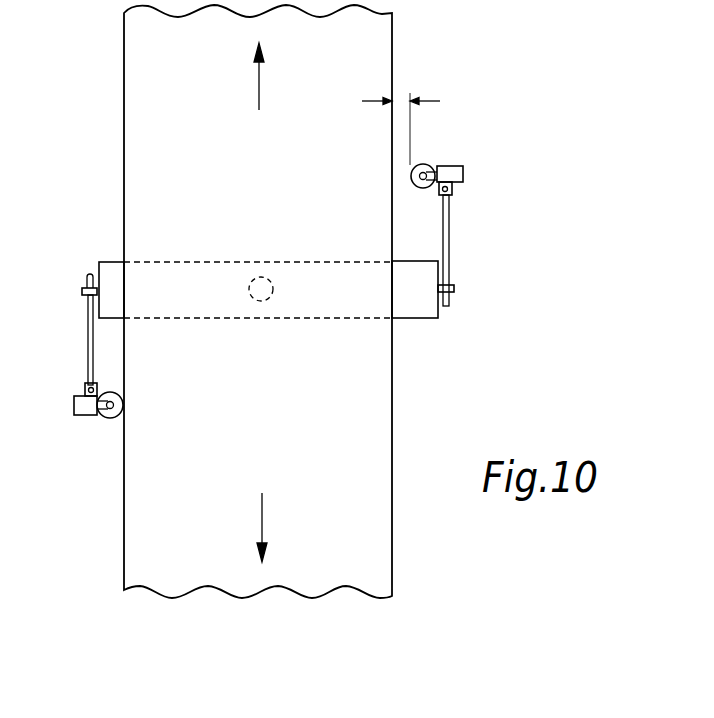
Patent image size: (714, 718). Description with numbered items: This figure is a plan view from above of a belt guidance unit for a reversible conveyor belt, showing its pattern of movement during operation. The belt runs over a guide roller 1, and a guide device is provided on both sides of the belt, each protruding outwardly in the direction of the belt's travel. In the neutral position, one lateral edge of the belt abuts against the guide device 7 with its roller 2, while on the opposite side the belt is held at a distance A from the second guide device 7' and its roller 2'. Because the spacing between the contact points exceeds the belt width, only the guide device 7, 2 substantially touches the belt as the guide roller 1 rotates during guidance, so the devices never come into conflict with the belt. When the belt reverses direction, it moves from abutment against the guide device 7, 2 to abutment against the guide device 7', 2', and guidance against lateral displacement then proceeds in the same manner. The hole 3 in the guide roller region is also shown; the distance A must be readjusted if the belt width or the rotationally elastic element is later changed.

The guide roller 1 is at (196, 282).
The roller 2 is at (98, 438).
The roller 2' is at (444, 149).
The hole 3 is at (262, 303).
The guide device 7 is at (64, 335).
The guide device 7' is at (471, 244).
The distance A is at (401, 96).